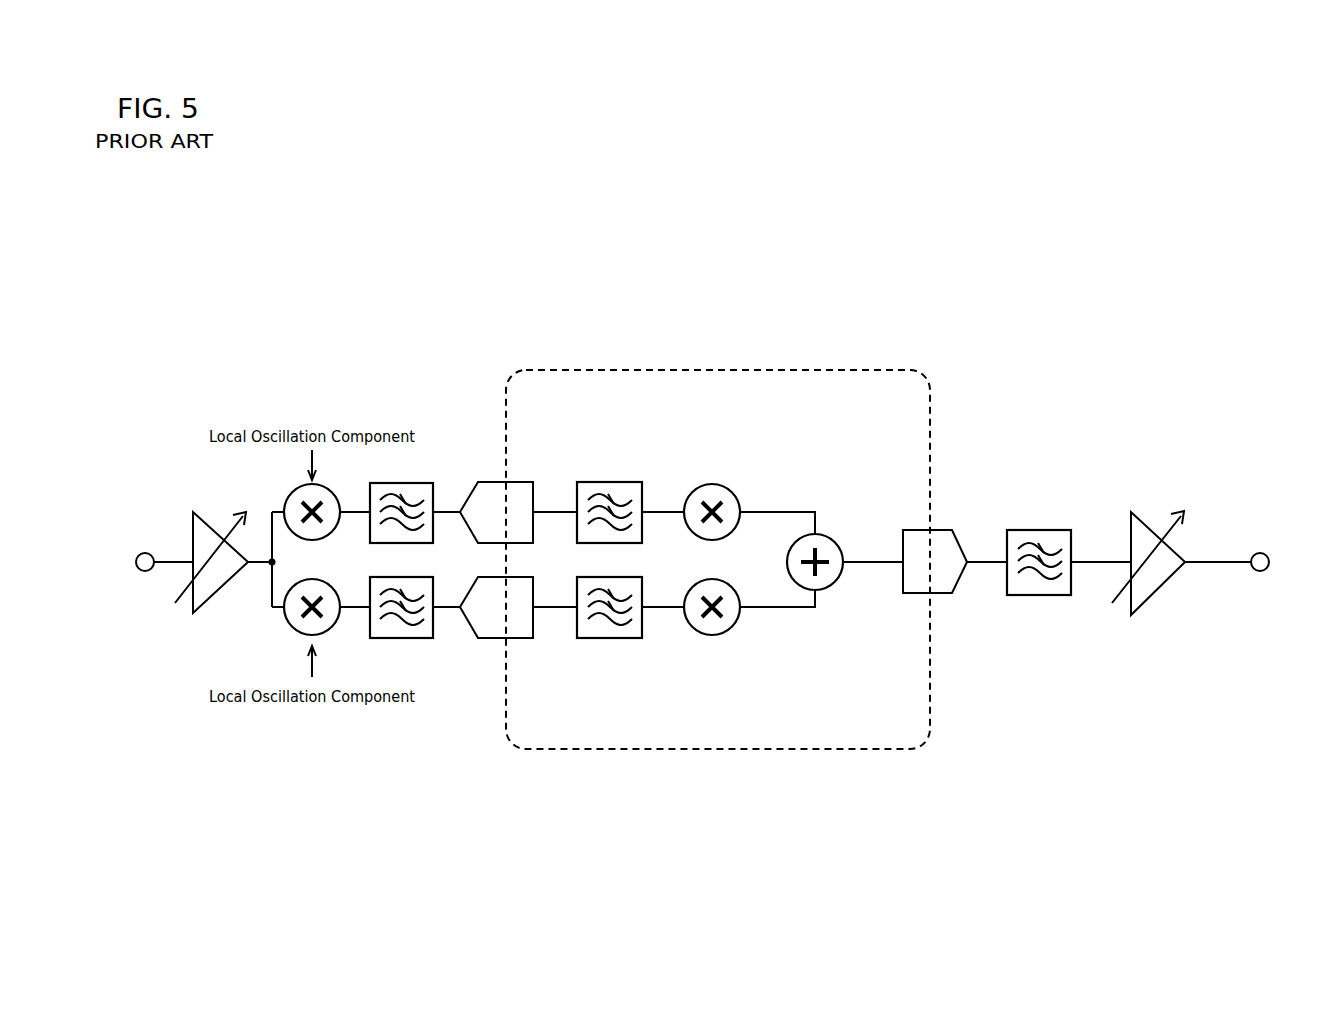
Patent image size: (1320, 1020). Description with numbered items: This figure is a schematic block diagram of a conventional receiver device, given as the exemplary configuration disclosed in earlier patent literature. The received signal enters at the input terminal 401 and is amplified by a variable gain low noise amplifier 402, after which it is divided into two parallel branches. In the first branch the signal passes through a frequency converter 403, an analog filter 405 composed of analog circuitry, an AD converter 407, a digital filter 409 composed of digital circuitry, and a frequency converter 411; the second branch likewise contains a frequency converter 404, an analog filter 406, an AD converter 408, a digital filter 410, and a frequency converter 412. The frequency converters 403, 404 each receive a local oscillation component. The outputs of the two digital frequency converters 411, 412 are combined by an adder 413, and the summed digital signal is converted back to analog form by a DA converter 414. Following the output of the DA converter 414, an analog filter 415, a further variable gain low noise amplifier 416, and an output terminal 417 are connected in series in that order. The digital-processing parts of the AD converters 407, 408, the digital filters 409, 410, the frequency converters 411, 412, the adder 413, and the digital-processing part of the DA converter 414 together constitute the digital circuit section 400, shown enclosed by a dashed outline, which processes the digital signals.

The digital circuit section 400 is at (870, 370).
The input terminal 401 is at (151, 554).
The variable gain low noise amplifier 402 is at (197, 512).
The frequency converter 403 is at (326, 488).
The frequency converter 404 is at (320, 634).
The analog filter 405 is at (400, 483).
The analog filter 406 is at (400, 638).
The AD converter 407 is at (518, 482).
The AD converter 408 is at (518, 638).
The digital filter 409 is at (608, 482).
The digital filter 410 is at (608, 638).
The frequency converter 411 is at (726, 488).
The frequency converter 412 is at (722, 634).
The adder 413 is at (828, 538).
The DA converter 414 is at (910, 593).
The analog filter 415 is at (1038, 530).
The variable gain low noise amplifier 416 is at (1136, 512).
The output terminal 417 is at (1266, 554).